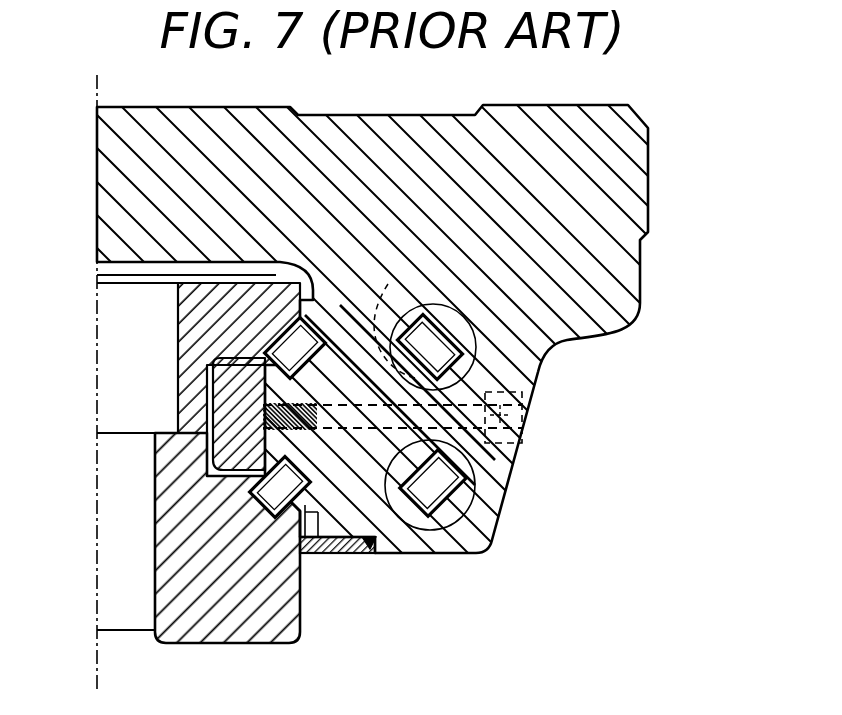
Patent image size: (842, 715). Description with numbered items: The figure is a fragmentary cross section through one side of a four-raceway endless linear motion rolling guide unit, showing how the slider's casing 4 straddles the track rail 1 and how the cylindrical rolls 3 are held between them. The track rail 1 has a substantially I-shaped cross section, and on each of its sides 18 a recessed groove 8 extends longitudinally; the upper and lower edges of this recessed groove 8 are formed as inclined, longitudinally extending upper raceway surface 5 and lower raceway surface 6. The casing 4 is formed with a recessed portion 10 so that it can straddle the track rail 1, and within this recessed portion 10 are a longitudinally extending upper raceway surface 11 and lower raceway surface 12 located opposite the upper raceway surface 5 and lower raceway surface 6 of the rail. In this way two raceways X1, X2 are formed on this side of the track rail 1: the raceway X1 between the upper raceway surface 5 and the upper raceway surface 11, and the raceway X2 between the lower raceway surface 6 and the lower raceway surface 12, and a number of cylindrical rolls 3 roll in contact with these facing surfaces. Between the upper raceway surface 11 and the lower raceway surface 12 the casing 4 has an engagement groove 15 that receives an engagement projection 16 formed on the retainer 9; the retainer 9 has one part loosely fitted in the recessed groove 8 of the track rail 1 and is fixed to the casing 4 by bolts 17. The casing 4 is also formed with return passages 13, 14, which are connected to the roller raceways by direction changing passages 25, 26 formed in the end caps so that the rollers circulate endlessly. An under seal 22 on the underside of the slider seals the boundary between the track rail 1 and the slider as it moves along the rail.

The track rail 1 is at (177, 577).
The cylindrical rolls 3 is at (295, 293).
The casing 4 is at (402, 142).
The upper raceway surface 5 is at (278, 324).
The lower raceway surface 6 is at (296, 548).
The recessed groove 8 is at (210, 432).
The retainer 9 is at (200, 380).
The recessed portion 10 is at (327, 275).
The upper raceway surface 11 is at (330, 328).
The lower raceway surface 12 is at (382, 557).
The return passage 13 is at (505, 487).
The return passage 14 is at (433, 320).
The engagement groove 15 is at (182, 322).
The engagement projection 16 is at (195, 398).
The bolts 17 is at (527, 433).
The sides 18 is at (300, 617).
The under seal 22 is at (380, 589).
The direction changing passage 25 is at (433, 553).
The direction changing passage 26 is at (388, 284).
The raceway X1 is at (280, 353).
The raceway X2 is at (247, 513).